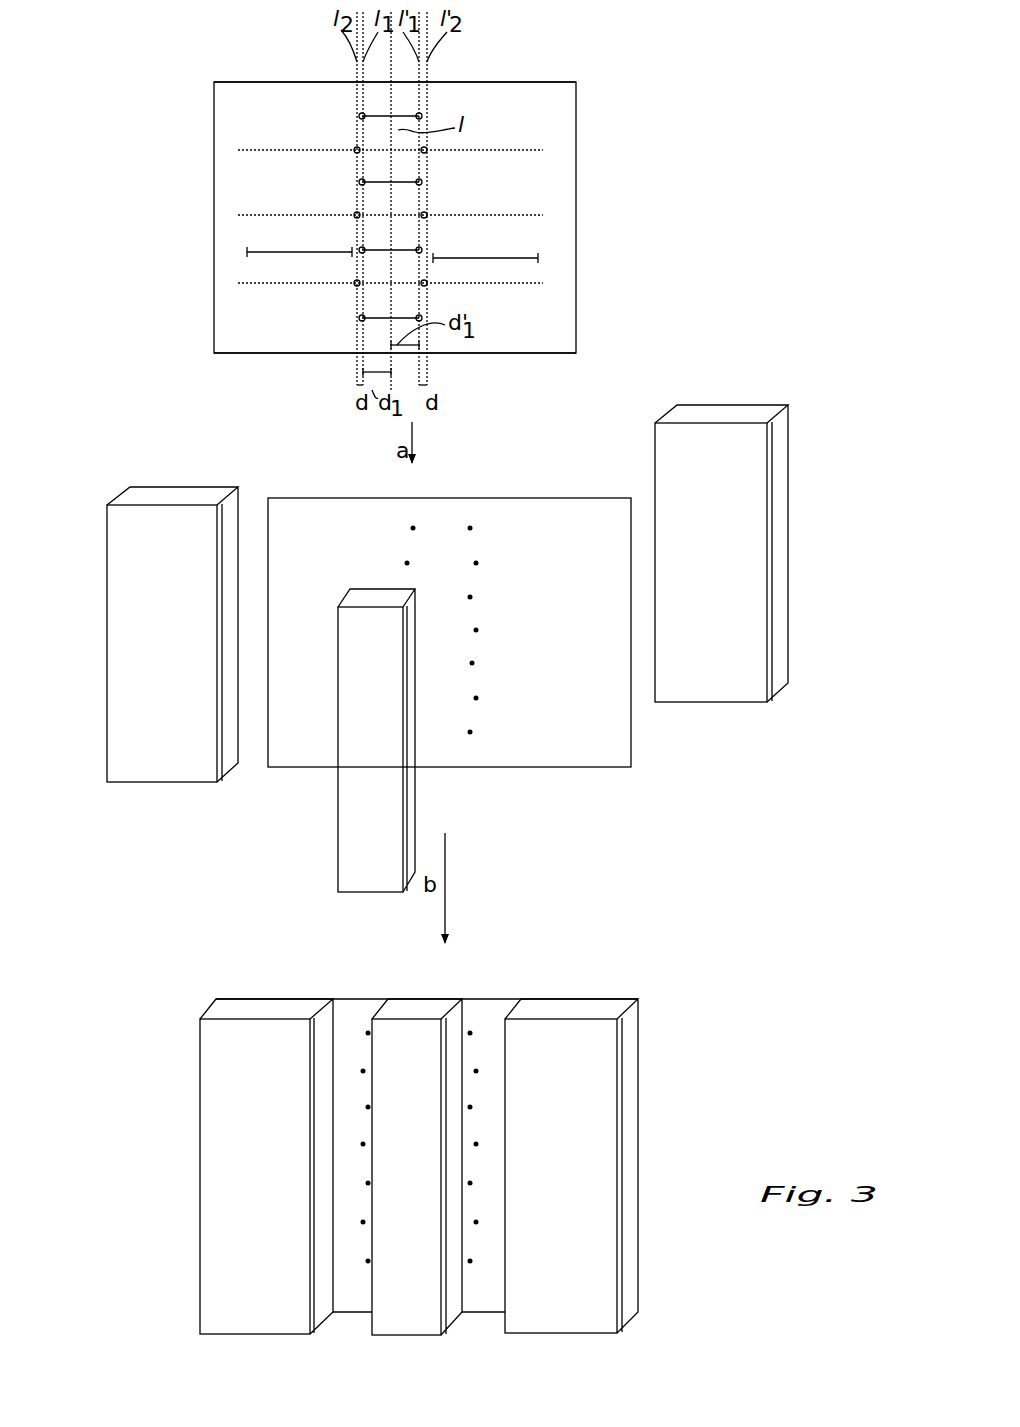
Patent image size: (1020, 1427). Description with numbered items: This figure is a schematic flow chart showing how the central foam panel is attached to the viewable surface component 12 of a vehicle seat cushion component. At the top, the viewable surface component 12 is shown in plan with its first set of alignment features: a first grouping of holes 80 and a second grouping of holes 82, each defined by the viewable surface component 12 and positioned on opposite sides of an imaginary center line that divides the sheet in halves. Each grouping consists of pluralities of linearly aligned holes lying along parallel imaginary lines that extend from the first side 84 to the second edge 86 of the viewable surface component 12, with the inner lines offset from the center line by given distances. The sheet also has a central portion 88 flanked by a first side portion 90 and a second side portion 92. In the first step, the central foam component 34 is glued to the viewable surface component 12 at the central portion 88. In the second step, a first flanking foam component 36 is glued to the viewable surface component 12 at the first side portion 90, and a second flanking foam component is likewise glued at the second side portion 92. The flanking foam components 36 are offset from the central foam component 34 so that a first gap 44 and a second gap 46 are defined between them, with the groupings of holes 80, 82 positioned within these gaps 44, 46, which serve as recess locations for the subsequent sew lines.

The viewable surface component 12 is at (214, 108).
The central foam component 34 is at (386, 745).
The first flanking foam component 36 is at (178, 628).
The first gap 44 is at (347, 1320).
The second gap 46 is at (481, 1320).
The first grouping of holes 80 is at (358, 96).
The second grouping of holes 82 is at (421, 96).
The first side 84 is at (267, 82).
The second edge 86 is at (268, 356).
The central portion 88 is at (400, 205).
The first side portion 90 is at (310, 250).
The second side portion 92 is at (494, 258).